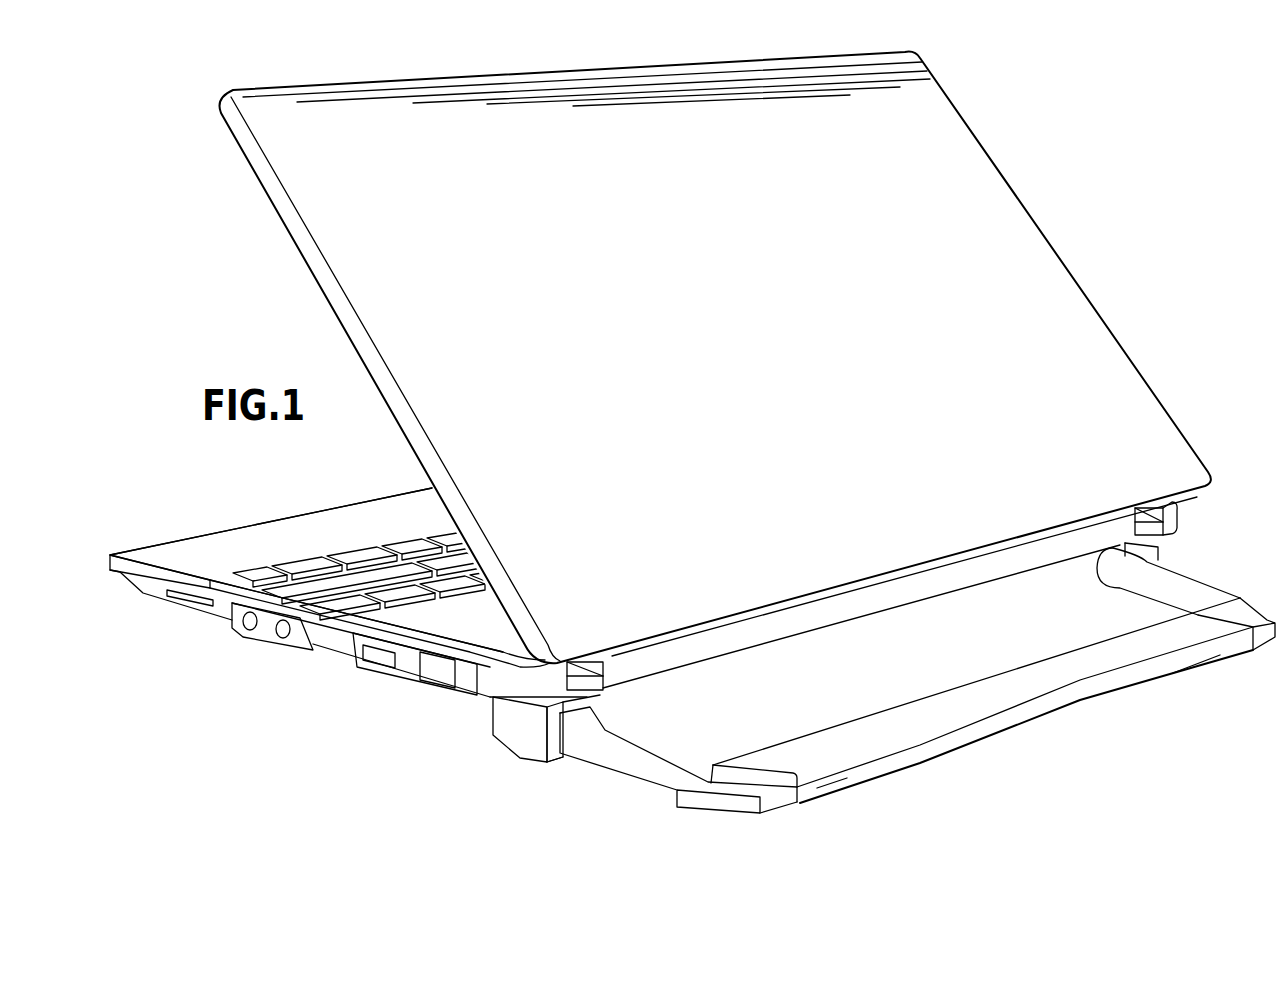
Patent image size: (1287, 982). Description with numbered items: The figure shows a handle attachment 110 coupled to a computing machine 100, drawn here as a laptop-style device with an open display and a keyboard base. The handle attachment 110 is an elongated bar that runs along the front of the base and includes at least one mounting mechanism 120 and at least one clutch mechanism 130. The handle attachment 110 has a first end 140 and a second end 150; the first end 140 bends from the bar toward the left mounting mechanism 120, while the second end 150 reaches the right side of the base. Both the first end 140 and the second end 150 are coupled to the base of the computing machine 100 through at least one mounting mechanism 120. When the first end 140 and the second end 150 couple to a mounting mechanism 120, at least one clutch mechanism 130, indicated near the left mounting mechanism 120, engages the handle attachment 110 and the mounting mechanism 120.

The computing machine 100 is at (1028, 288).
The handle attachment 110 is at (1125, 682).
The mounting mechanism 120 is at (515, 735).
The clutch mechanism 130 is at (560, 772).
The first end 140 is at (655, 790).
The second end 150 is at (1110, 568).